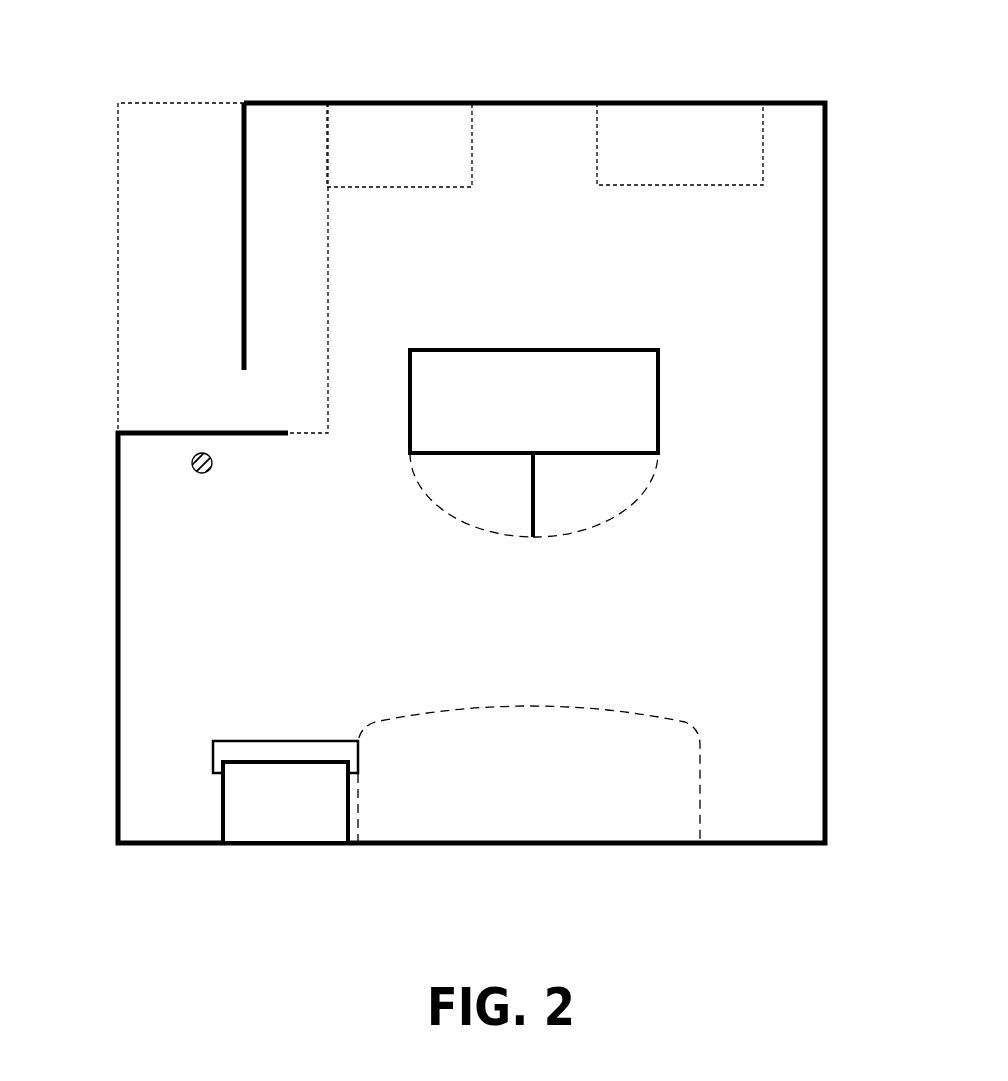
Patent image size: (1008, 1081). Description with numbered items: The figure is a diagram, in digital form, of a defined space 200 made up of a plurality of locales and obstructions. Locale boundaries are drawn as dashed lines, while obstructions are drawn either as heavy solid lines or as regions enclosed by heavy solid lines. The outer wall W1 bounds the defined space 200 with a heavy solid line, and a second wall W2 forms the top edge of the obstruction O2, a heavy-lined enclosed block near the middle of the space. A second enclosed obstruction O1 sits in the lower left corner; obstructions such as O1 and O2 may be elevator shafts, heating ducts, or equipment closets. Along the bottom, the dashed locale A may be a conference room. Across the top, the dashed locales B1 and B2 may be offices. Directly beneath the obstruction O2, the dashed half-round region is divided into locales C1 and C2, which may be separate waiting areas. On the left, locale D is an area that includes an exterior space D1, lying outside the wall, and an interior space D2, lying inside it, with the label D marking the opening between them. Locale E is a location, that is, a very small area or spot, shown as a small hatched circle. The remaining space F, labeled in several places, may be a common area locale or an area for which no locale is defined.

The defined space 200 is at (698, 82).
The wall W1 is at (823, 308).
The wall W2 is at (490, 350).
The exterior space D1 is at (165, 259).
The interior space D2 is at (268, 259).
The locale D is at (234, 426).
The locale B1 is at (393, 159).
The locale B2 is at (642, 161).
The obstruction O2 is at (516, 407).
The locale C1 is at (464, 506).
The locale C2 is at (567, 506).
The locale E is at (212, 468).
The space F is at (567, 281).
The obstruction O1 is at (268, 817).
The locale A is at (517, 799).